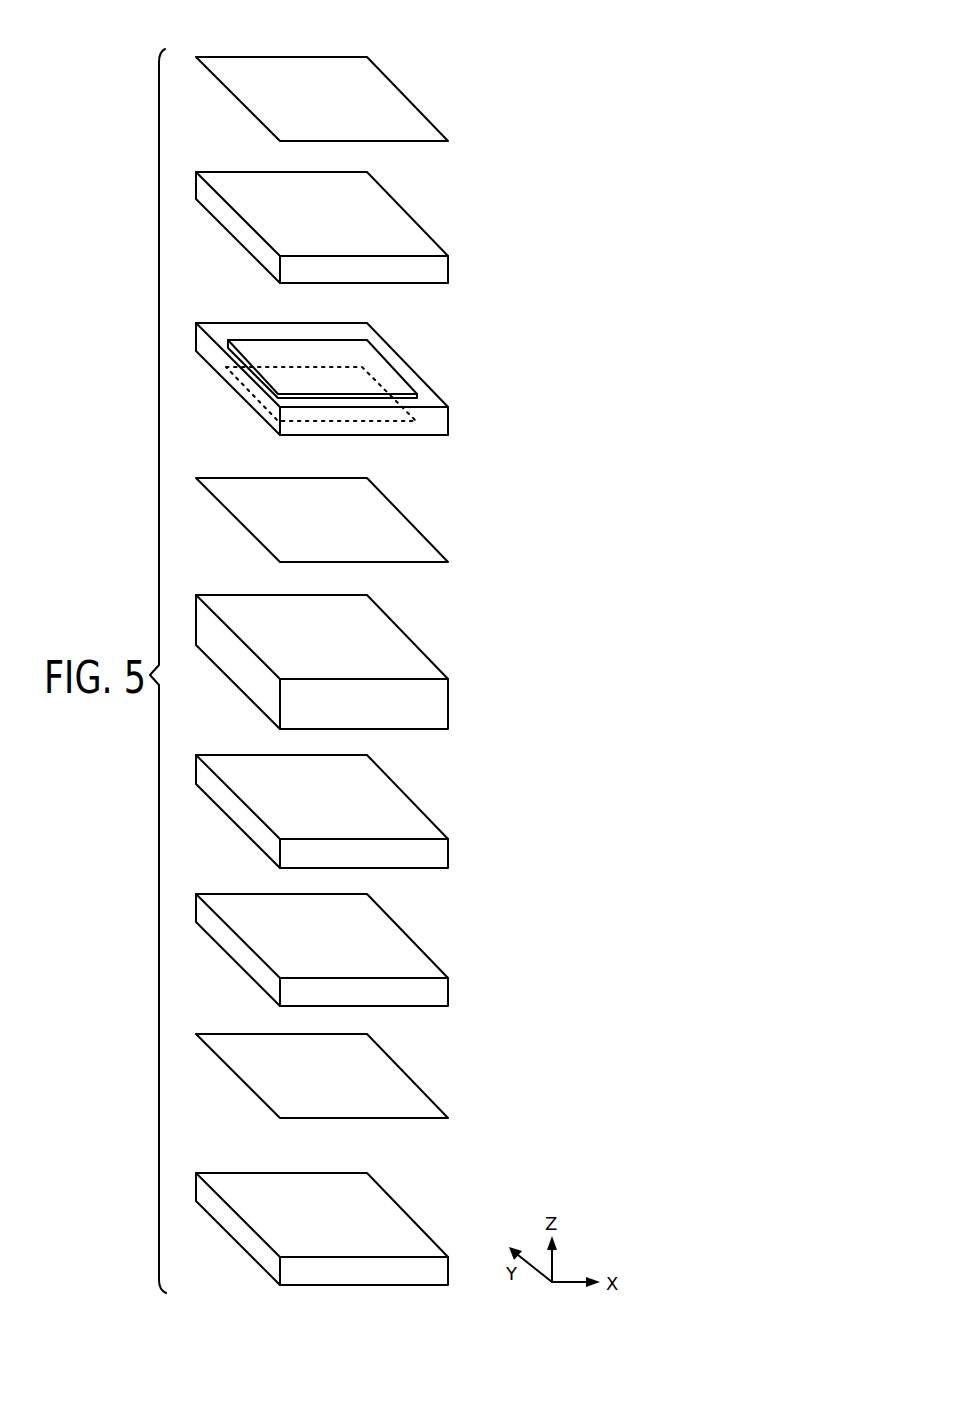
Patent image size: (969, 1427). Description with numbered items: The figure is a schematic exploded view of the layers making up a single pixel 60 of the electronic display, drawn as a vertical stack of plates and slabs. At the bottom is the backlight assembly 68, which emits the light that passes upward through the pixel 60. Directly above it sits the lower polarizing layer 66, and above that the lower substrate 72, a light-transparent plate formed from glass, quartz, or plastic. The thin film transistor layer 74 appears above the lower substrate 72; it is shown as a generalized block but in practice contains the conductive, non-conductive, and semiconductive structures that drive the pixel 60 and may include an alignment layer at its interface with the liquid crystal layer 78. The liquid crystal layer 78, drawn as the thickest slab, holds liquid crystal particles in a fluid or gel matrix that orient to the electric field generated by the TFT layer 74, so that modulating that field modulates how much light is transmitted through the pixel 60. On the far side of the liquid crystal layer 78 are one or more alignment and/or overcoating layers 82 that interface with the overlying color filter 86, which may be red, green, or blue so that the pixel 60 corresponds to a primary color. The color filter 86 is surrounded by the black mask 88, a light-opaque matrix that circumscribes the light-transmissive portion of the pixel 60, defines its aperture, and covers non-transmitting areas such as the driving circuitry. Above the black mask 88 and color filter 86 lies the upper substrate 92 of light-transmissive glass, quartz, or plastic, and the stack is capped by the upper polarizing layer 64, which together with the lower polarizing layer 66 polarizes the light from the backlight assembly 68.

The pixel 60 is at (489, 30).
The upper polarizing layer 64 is at (408, 98).
The upper substrate 92 is at (408, 213).
The black mask 88 is at (407, 365).
The color filter 86 is at (370, 358).
The alignment and/or overcoating layers 82 is at (408, 520).
The liquid crystal layer 78 is at (408, 633).
The thin film transistor (TFT) layer 74 is at (408, 797).
The lower substrate 72 is at (408, 933).
The lower polarizing layer 66 is at (408, 1075).
The backlight assembly 68 is at (408, 1213).